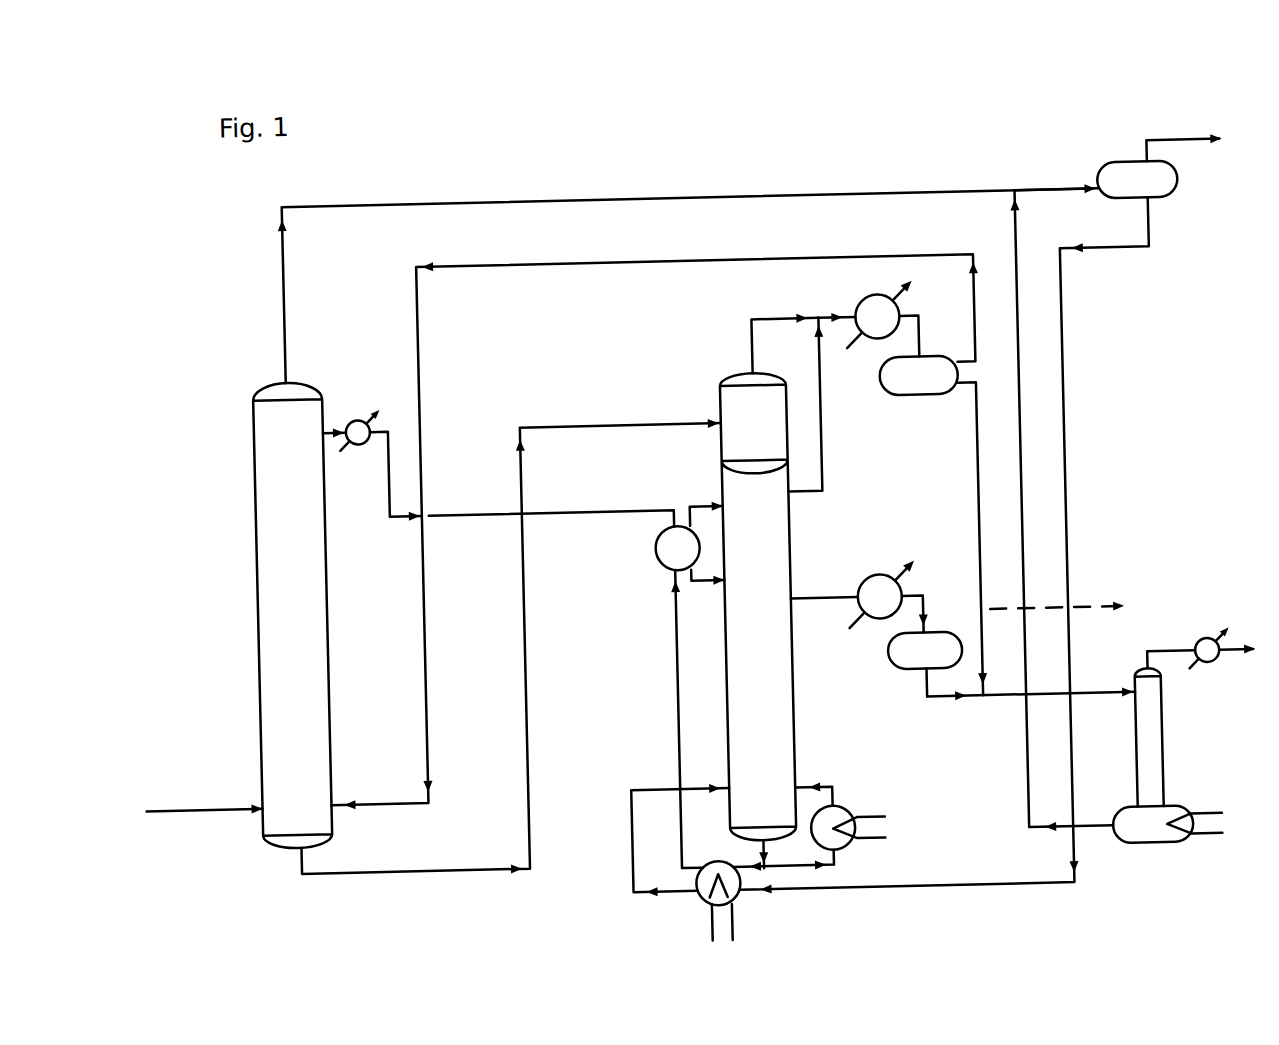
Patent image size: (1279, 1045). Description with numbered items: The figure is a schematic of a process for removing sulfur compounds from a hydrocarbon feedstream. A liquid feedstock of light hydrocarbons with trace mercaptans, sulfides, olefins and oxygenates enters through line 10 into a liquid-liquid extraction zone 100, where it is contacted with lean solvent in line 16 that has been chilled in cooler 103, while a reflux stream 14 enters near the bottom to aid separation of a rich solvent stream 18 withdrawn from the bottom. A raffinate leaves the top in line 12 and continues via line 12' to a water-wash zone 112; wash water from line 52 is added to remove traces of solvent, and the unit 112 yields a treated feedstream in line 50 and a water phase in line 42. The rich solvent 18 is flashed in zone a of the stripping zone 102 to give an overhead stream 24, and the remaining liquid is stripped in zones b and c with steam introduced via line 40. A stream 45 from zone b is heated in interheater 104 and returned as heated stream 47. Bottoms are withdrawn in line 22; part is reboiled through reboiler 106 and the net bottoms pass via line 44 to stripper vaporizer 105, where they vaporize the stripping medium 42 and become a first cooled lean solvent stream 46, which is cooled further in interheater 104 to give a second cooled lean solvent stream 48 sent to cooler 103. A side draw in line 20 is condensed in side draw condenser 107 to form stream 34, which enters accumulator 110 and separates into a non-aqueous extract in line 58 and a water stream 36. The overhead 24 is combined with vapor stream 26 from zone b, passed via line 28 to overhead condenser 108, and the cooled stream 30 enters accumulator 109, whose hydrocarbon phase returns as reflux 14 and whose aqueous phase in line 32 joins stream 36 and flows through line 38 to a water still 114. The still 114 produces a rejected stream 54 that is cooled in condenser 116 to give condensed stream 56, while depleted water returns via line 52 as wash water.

The feedstream line 10 is at (203, 799).
The raffinate stream line 12 is at (688, 266).
The raffinate line to water-wash zone 12' is at (1053, 168).
The reflux stream line 14 is at (522, 265).
The lean solvent line 16 is at (350, 417).
The rich solvent stream line 18 is at (349, 869).
The side draw line 20 is at (822, 597).
The bottoms stream line 22 is at (756, 856).
The overhead stream 24 is at (755, 344).
The vapor stream line 26 is at (827, 465).
The vapor admixture line 28 is at (838, 320).
The cooled overhead stream line 30 is at (926, 335).
The aqueous phase line 32 is at (984, 470).
The condensed side draw stream line 34 is at (926, 609).
The water stream line 36 is at (923, 707).
The water admixture line 38 is at (998, 708).
The stripping medium line 40 is at (649, 785).
The water phase line 42 is at (1160, 227).
The net bottoms stream line 44 is at (753, 871).
The interheater feed stream line 45 is at (719, 507).
The first cooled lean solvent stream line 46 is at (675, 688).
The heated stream line 47 is at (692, 584).
The second cooled lean solvent stream line 48 is at (565, 514).
The treated feedstream line 50 is at (1194, 151).
The wash water line 52 is at (1028, 237).
The rejected stream line 54 is at (1169, 660).
The condensed stream line 56 is at (1225, 669).
The extract stream line 58 is at (1085, 615).
The liquid-liquid extraction zone 100 is at (255, 575).
The stripping zone 102 is at (791, 669).
The cooler 103 is at (357, 455).
The interheater 104 is at (656, 559).
The stripper vaporizer 105 is at (696, 902).
The reboiler 106 is at (841, 848).
The side draw condenser 107 is at (887, 576).
The overhead condenser 108 is at (867, 334).
The accumulator 109 is at (921, 404).
The accumulator 110 is at (896, 678).
The water-wash zone 112 is at (1189, 191).
The water still 114 is at (1160, 741).
The condenser 116 is at (1221, 628).